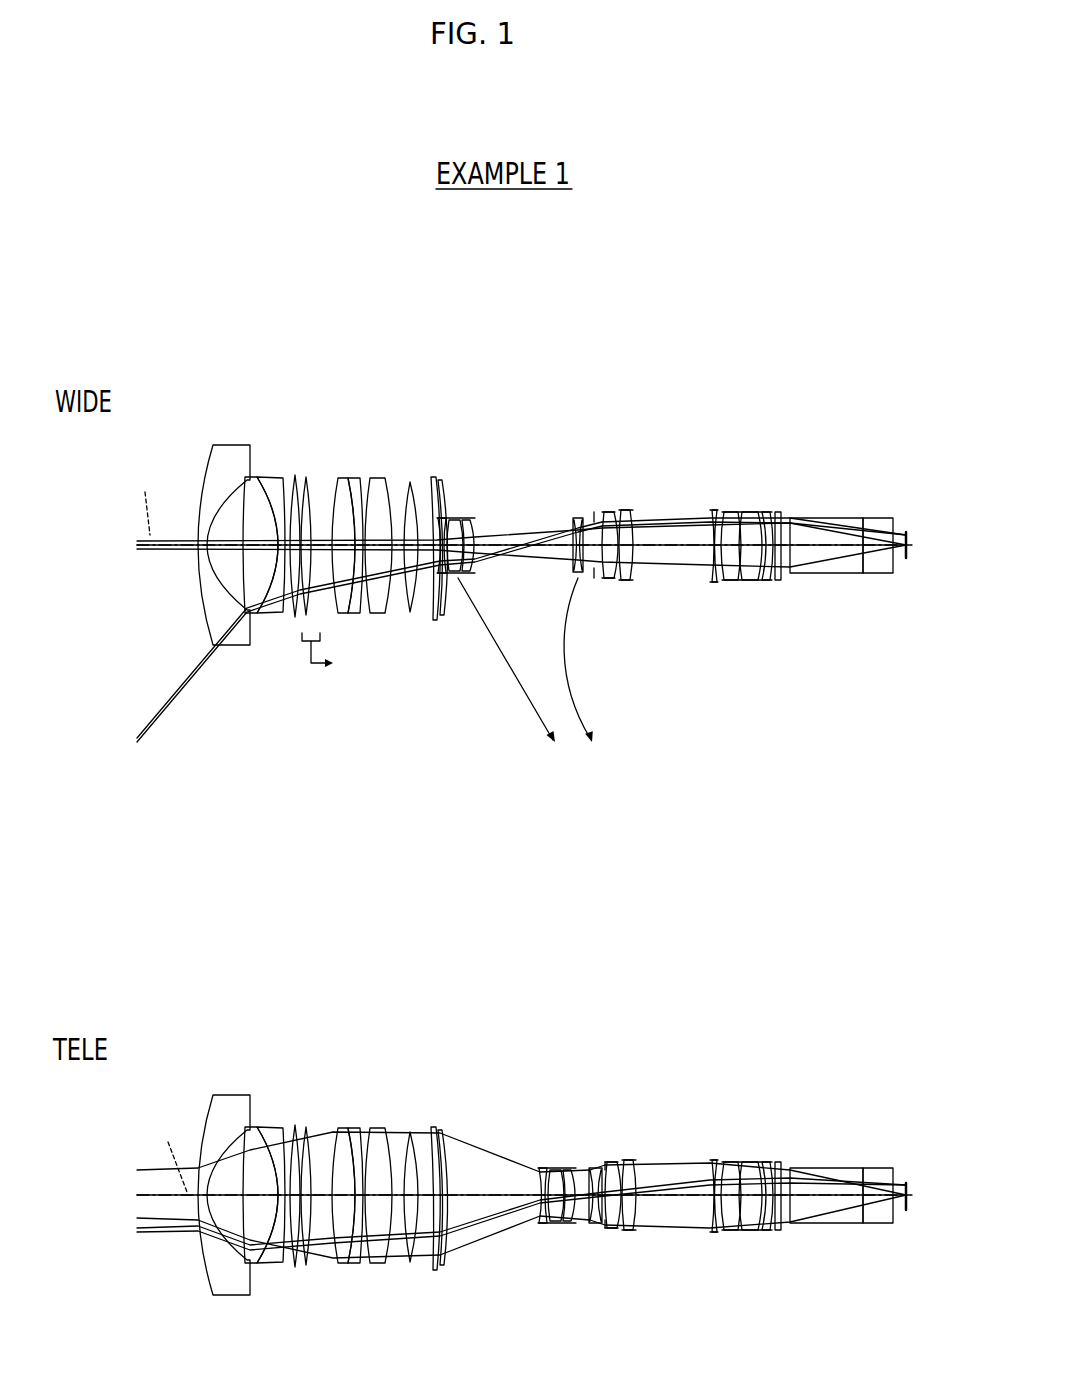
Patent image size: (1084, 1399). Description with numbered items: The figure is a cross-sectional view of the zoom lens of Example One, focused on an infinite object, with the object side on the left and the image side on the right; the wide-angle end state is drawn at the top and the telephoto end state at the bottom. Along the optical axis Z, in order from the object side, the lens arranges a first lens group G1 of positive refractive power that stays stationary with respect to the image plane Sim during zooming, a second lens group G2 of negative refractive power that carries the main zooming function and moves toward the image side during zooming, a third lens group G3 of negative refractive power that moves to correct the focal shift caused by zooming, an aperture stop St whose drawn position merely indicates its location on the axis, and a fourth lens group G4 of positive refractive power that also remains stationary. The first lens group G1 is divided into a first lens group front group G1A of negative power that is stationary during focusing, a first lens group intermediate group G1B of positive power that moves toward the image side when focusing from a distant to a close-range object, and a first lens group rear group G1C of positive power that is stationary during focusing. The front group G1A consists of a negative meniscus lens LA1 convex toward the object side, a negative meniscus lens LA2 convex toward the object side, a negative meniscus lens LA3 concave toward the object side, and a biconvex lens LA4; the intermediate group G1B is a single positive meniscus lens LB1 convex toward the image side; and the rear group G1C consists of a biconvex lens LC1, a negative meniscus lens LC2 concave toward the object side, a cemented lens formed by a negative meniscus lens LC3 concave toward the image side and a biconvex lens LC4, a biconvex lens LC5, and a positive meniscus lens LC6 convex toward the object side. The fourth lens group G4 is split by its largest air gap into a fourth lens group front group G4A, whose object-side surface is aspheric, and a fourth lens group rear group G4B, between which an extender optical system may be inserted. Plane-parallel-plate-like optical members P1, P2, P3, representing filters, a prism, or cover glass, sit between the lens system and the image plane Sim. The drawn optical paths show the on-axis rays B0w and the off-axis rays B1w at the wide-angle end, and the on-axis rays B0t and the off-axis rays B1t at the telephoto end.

The first lens group G1 is at (503, 275).
The first lens group front group G1A is at (312, 315).
The first lens group intermediate group G1B is at (368, 315).
The first lens group rear group G1C is at (587, 315).
The negative meniscus lens LA1 is at (218, 446).
The negative meniscus lens LA2 is at (250, 476).
The negative meniscus lens LA3 is at (275, 478).
The biconvex lens LA4 is at (293, 474).
The positive meniscus lens LB1 is at (306, 476).
The biconvex lens LC1 is at (340, 478).
The negative meniscus lens LC2 is at (353, 478).
The negative meniscus lens LC3 is at (374, 478).
The biconvex lens LC4 is at (409, 480).
The biconvex lens LC5 is at (433, 476).
The positive meniscus lens LC6 is at (441, 479).
The second lens group G2 is at (478, 514).
The third lens group G3 is at (586, 503).
The fourth lens group G4 is at (770, 420).
The fourth lens group front group G4A is at (642, 458).
The fourth lens group rear group G4B is at (775, 458).
The aperture stop St is at (595, 573).
The optical member P1 is at (780, 514).
The optical member P2 is at (828, 517).
The optical member P3 is at (880, 517).
The image plane Sim is at (908, 558).
The optical axis Z is at (163, 825).
The on-axis rays B0w is at (126, 530).
The off-axis rays B1w is at (126, 724).
The on-axis rays B0t is at (147, 1167).
The off-axis rays B1t is at (147, 1238).